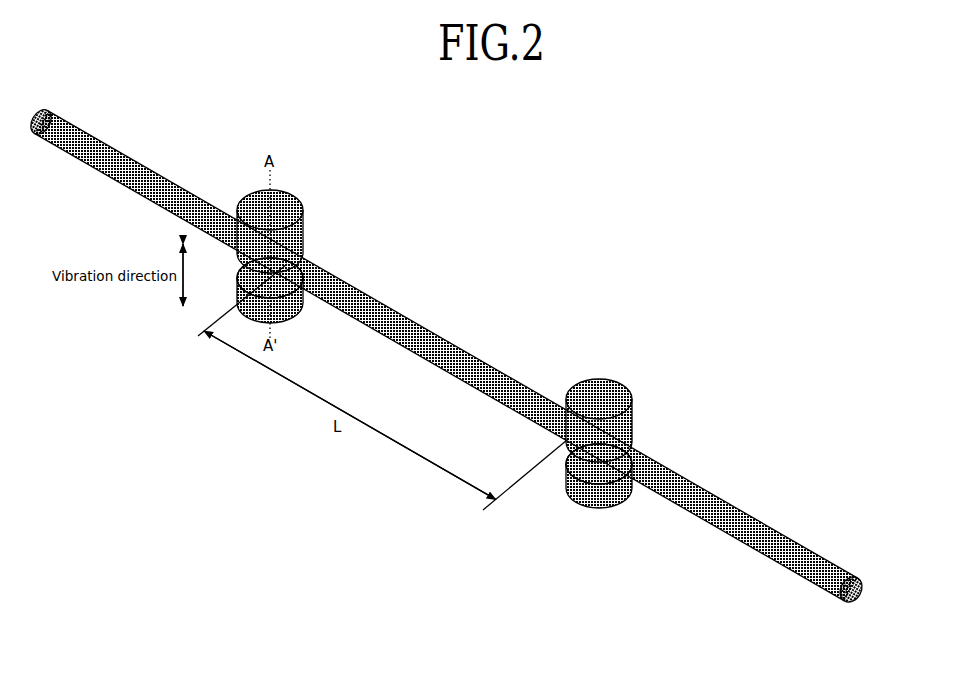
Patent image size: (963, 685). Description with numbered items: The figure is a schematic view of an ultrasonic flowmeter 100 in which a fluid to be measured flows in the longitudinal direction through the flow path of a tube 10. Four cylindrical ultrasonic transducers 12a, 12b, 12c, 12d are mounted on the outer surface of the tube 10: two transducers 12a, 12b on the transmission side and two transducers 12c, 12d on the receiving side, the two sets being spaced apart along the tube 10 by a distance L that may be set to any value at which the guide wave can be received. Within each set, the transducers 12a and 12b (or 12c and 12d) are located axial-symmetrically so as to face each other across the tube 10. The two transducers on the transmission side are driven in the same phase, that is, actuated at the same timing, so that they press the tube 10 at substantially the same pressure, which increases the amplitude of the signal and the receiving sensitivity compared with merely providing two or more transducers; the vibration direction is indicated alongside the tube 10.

The tube 10 is at (445, 342).
The ultrasonic transducer 12a is at (296, 232).
The ultrasonic transducer 12b is at (299, 303).
The ultrasonic transducer 12c is at (616, 393).
The ultrasonic transducer 12d is at (606, 497).
The ultrasonic flowmeter 100 is at (447, 384).